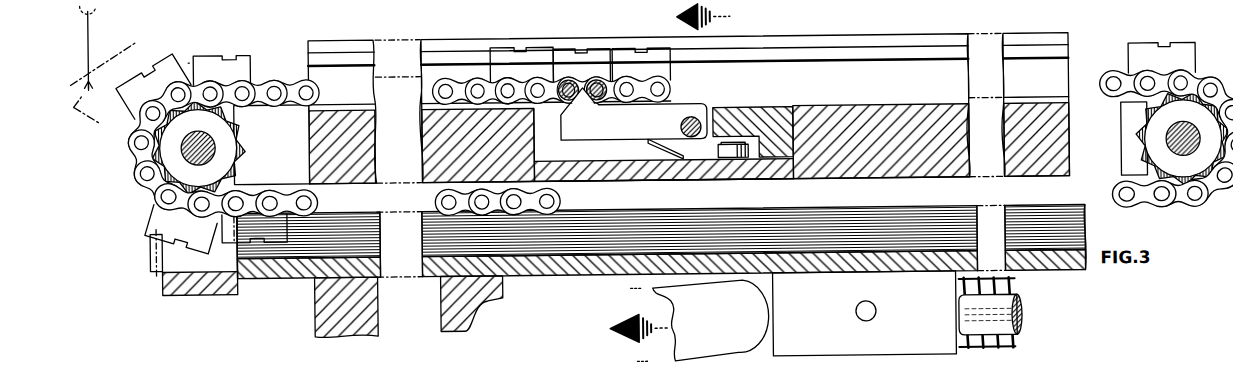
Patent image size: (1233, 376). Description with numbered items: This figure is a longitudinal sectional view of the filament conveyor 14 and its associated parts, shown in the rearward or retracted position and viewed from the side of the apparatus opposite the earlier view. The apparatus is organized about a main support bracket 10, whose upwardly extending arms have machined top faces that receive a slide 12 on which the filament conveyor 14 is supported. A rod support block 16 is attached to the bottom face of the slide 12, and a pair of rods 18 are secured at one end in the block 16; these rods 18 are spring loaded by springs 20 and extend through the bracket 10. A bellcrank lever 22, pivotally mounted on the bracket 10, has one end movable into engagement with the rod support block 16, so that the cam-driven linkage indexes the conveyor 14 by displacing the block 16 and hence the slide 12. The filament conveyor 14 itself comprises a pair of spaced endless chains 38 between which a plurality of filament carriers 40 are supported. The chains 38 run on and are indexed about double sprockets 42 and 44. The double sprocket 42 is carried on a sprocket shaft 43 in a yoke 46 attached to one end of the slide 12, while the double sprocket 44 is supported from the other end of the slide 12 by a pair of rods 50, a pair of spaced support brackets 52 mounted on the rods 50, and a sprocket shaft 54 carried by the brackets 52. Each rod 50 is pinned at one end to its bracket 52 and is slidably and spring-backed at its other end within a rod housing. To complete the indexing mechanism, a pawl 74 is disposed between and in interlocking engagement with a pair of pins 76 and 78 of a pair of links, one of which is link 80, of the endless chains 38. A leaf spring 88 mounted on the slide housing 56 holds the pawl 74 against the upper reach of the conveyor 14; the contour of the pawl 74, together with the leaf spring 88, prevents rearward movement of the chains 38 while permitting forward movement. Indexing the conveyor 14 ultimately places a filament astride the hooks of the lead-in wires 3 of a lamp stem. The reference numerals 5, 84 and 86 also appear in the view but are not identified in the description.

The lead-in wires 3 is at (104, 81).
The section line 5- 5 is at (99, 48).
The main support bracket 10 is at (311, 326).
The slide 12 is at (567, 268).
The filament conveyor 14 is at (183, 56).
The rod support block 16 is at (931, 363).
The rods 18 is at (1020, 326).
The springs 20 is at (1014, 293).
The bellcrank lever 22 is at (726, 358).
The endless chains 38 is at (295, 82).
The filament carriers 40 is at (160, 68).
The double sprocket 42 is at (240, 160).
The sprocket shaft 43 is at (209, 141).
The double sprocket 44 is at (1165, 215).
The yoke 46 is at (172, 259).
The rods 50 is at (1118, 134).
The support brackets 52 is at (1128, 144).
The sprocket shaft 54 is at (1176, 146).
The slide housing 56 is at (890, 120).
The pawl 74 is at (577, 128).
The pin 76 is at (566, 84).
The pin 78 is at (598, 84).
The link 80 is at (582, 88).
The pivot pin 84 is at (691, 121).
The stop block 86 is at (776, 112).
The leaf spring 88 is at (648, 152).